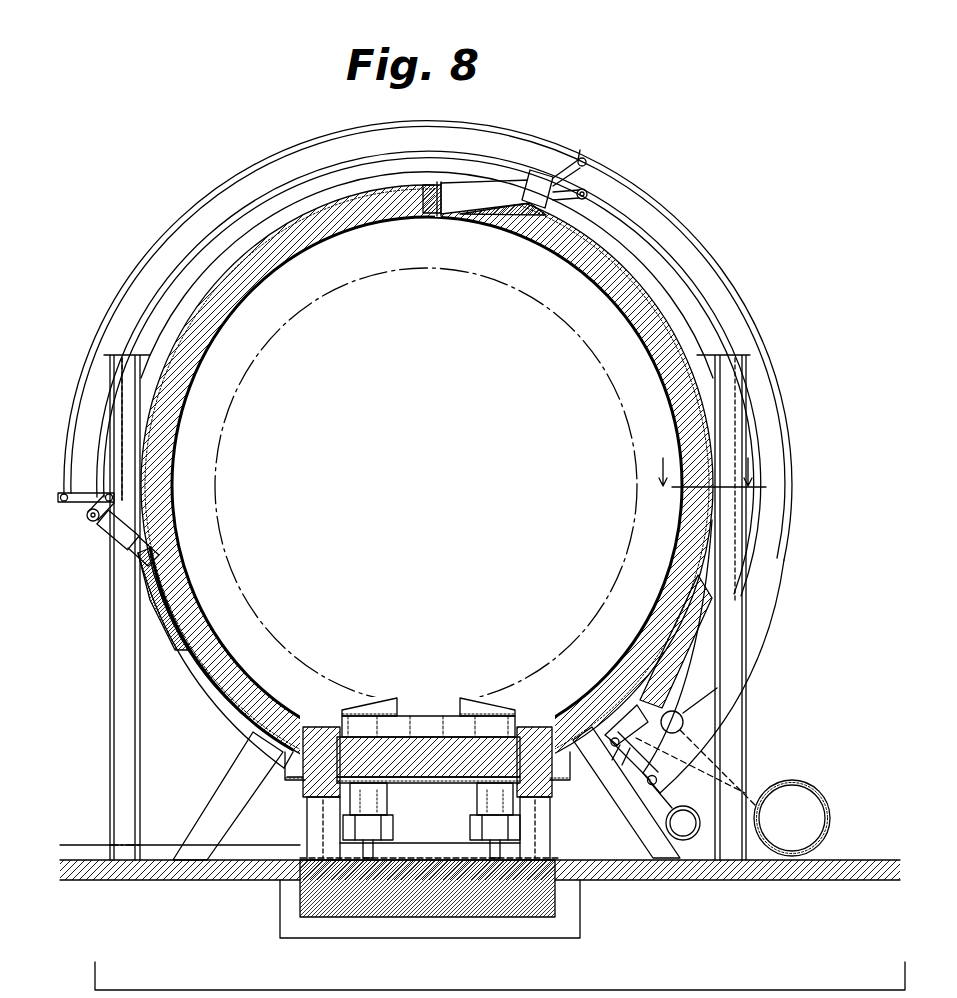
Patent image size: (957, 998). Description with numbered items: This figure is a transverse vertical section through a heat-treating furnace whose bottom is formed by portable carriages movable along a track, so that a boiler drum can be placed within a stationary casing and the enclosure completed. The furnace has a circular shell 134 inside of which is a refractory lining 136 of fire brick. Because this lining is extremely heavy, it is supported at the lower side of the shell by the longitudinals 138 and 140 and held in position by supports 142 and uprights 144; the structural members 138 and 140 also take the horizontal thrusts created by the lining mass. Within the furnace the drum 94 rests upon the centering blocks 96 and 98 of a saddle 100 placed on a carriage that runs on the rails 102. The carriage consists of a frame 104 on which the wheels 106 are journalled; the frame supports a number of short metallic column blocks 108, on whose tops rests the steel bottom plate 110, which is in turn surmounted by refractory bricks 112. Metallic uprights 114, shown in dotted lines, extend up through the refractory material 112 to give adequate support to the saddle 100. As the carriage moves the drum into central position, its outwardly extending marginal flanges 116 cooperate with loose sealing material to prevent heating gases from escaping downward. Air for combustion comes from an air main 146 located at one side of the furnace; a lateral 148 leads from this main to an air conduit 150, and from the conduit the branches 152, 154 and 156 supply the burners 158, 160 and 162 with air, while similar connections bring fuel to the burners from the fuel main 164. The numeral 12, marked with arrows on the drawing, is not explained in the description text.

The section line 12 is at (706, 486).
The drum 94 is at (216, 491).
The centering block 96 is at (362, 705).
The centering block 98 is at (492, 705).
The saddle 100 is at (428, 723).
The rails 102 is at (385, 852).
The frame 104 is at (478, 798).
The wheels 106 is at (400, 832).
The column blocks 108 is at (375, 798).
The bottom plate 110 is at (330, 800).
The refractory bricks 112 is at (395, 750).
The metallic uprights 114 is at (322, 728).
The marginal flanges 116 is at (540, 800).
The circular shell 134 is at (650, 292).
The refractory lining 136 is at (556, 238).
The longitudinal 138 is at (290, 775).
The longitudinal 140 is at (553, 775).
The supports 142 is at (236, 765).
The uprights 144 is at (112, 690).
The air main 146 is at (800, 805).
The lateral 148 is at (755, 785).
The air conduit 150 is at (755, 600).
The branch 152 is at (105, 521).
The branch 154 is at (585, 172).
The branch 156 is at (661, 760).
The burner 158 is at (183, 590).
The burner 160 is at (483, 212).
The burner 162 is at (646, 650).
The fuel main 164 is at (690, 800).